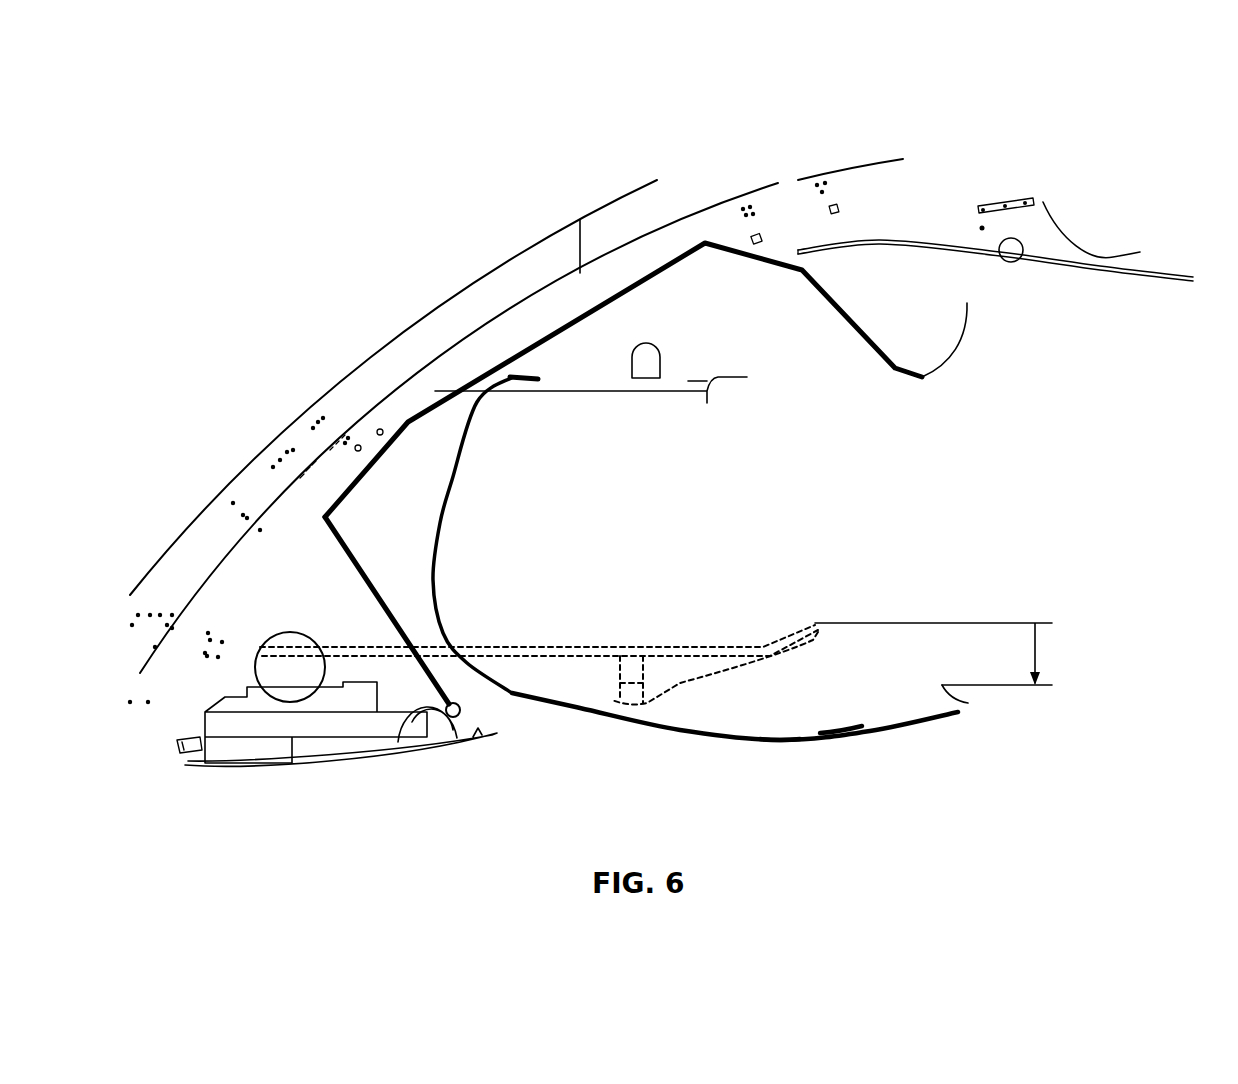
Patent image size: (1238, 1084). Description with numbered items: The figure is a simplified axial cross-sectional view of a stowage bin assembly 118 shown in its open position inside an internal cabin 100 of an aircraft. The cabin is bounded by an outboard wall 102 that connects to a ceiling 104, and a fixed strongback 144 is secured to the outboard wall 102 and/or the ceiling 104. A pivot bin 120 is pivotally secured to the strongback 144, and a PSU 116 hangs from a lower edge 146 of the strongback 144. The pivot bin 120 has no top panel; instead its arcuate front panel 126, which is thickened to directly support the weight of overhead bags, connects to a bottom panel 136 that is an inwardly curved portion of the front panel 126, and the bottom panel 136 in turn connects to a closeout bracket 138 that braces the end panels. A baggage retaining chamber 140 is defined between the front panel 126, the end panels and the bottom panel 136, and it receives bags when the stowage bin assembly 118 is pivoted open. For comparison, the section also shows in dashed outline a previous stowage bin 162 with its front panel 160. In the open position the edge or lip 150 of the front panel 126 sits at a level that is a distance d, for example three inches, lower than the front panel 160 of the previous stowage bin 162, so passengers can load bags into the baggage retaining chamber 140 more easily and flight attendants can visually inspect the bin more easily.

The internal cabin 100 is at (1100, 494).
The outboard wall 102 is at (242, 542).
The ceiling 104 is at (850, 165).
The PSU housing 116 is at (247, 723).
The stowage bin assembly 118 is at (857, 750).
The pivot bin 120 is at (717, 737).
The front panel 126 is at (798, 742).
The bottom panel 136 is at (453, 478).
The closeout bracket 138 is at (530, 377).
The baggage retaining chamber 140 is at (780, 520).
The strongback 144 is at (667, 265).
The lower edge 146 is at (460, 705).
The lip 150 is at (968, 703).
The front panel of previous stowage bin 160 is at (737, 647).
The previous stowage bin 162 is at (605, 620).
The distance d is at (1037, 653).